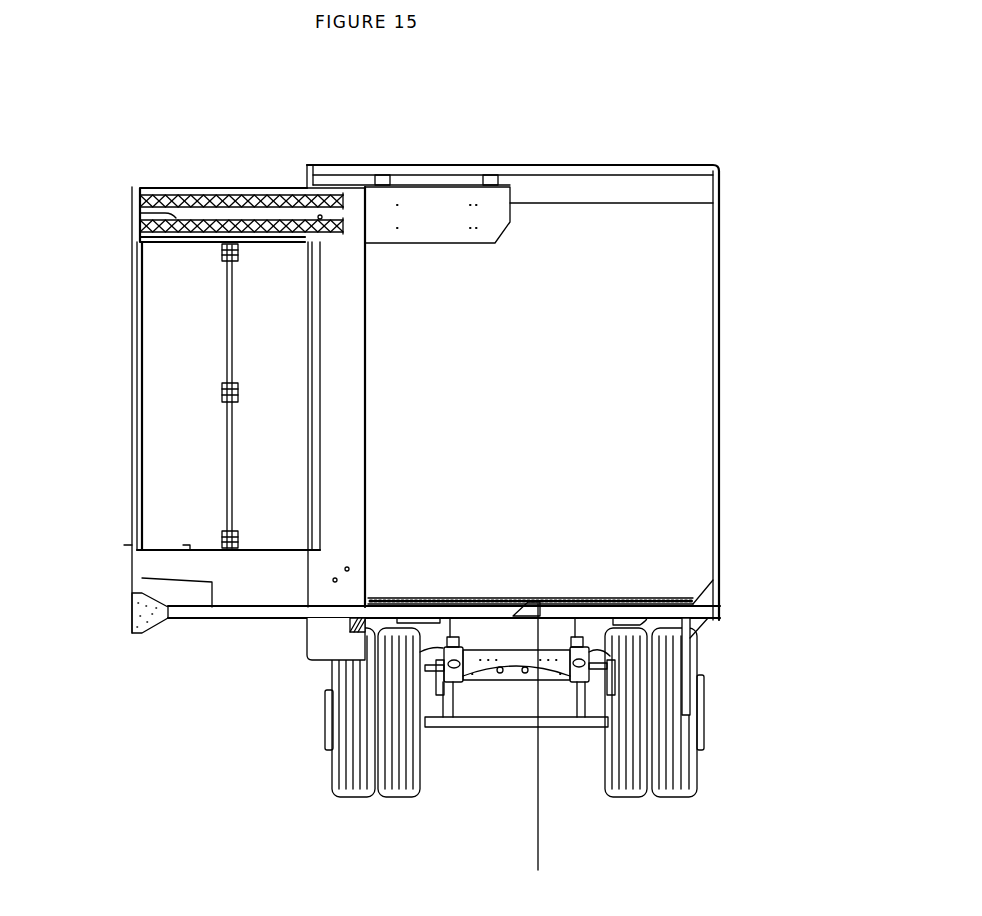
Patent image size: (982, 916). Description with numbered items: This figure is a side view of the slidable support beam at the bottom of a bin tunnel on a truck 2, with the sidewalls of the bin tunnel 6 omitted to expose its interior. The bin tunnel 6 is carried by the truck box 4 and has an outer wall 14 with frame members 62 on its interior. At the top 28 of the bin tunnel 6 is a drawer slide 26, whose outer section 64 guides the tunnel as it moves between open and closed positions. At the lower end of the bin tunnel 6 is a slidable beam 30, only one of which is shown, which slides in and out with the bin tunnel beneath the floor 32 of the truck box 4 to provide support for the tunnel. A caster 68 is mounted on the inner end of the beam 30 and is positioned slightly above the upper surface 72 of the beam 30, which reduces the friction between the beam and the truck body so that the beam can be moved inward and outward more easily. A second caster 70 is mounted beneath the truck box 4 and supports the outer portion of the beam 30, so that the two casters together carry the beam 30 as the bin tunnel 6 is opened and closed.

The truck 2 is at (496, 392).
The truck box 4 is at (715, 228).
The bin tunnel 6 is at (197, 280).
The outer wall 14 is at (140, 380).
The drawer slide 26 is at (230, 205).
The top 28 is at (180, 187).
The slidable beam 30 is at (242, 613).
The floor 32 is at (568, 598).
The frame member 62 is at (142, 460).
The outer section of the drawer slide 64 is at (140, 213).
The caster 68 is at (526, 749).
The second caster 70 is at (352, 624).
The upper surface 72 is at (142, 578).